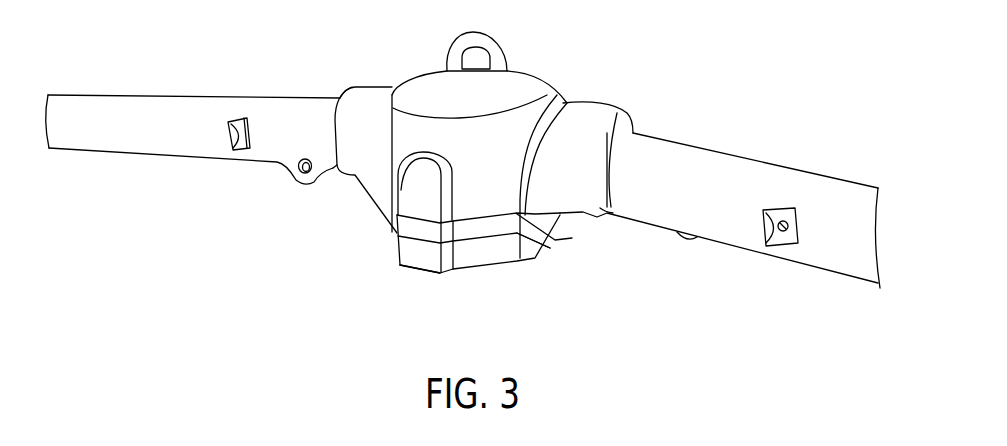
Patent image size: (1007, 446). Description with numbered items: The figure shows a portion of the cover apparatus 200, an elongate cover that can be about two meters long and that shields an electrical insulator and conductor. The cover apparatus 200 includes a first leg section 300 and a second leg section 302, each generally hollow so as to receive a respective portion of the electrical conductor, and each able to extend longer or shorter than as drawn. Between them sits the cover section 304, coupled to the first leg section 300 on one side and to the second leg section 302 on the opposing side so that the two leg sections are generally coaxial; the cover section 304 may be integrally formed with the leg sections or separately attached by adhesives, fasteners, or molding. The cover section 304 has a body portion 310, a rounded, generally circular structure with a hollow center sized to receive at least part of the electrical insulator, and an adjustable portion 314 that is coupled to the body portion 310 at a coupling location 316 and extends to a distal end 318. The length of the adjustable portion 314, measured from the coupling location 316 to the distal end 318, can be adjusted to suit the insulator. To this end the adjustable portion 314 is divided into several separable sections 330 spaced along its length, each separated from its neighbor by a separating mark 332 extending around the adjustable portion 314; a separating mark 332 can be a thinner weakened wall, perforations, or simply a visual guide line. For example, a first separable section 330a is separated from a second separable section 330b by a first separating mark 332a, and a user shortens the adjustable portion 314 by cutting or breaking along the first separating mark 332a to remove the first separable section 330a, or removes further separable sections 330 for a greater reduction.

The cover apparatus 200 is at (108, 65).
The first leg section 300 is at (122, 152).
The second leg section 302 is at (848, 183).
The cover section 304 is at (425, 85).
The body portion 310 is at (557, 97).
The adjustable portion 314 is at (503, 265).
The coupling location 316 is at (413, 232).
The distal end 318 is at (408, 267).
The separable sections 330 is at (468, 258).
The first separable section 330a is at (432, 266).
The second separable section 330b is at (444, 238).
The separating mark 332 is at (543, 245).
The first separating mark 332a is at (483, 240).